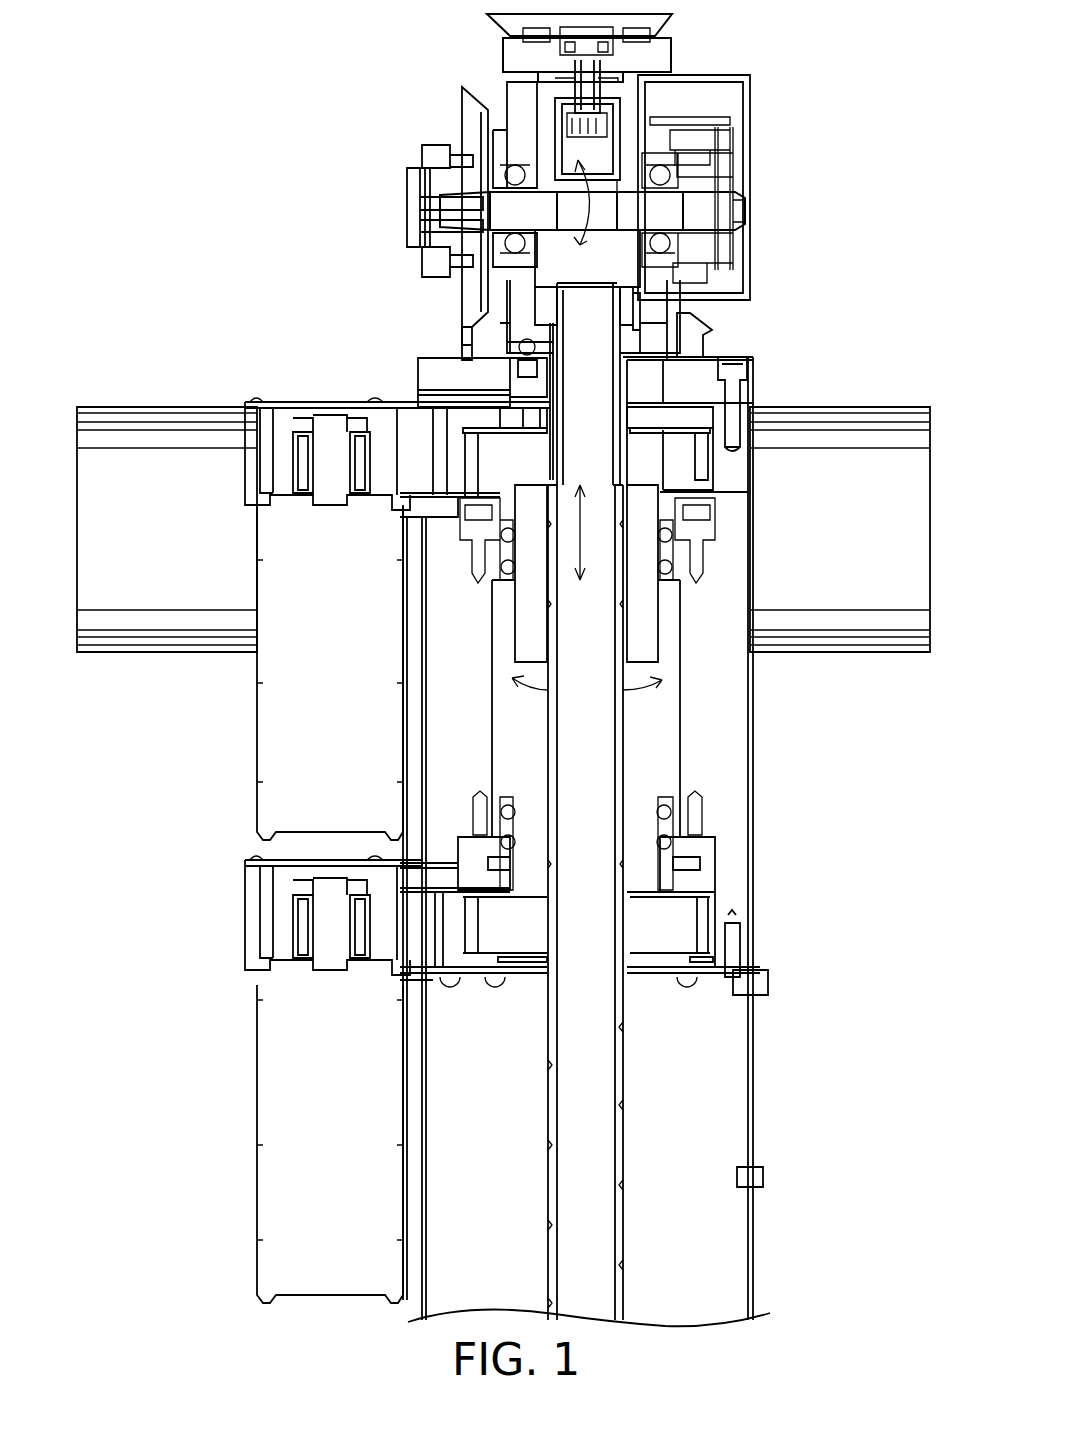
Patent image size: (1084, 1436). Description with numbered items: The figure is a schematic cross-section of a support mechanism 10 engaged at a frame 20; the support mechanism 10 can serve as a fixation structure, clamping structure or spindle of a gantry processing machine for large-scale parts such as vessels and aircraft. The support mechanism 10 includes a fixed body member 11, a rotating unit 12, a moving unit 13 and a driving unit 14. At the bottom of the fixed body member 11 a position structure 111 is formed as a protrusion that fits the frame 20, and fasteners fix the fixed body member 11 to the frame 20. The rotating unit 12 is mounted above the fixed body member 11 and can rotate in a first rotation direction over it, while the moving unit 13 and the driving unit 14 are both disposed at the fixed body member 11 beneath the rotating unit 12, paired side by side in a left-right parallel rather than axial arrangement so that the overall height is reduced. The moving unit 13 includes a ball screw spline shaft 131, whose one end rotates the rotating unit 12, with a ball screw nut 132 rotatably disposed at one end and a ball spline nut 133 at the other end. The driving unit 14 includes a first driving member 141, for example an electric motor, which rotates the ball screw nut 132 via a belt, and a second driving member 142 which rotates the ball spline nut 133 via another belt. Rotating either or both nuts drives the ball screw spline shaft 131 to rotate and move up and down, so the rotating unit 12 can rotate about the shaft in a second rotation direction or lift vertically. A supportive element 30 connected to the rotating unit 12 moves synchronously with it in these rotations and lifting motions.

The support mechanism 10 is at (503, 693).
The fixed body member 11 is at (432, 370).
The position structure 111 is at (752, 398).
The rotating unit 12 is at (771, 175).
The moving unit 13 is at (563, 804).
The ball screw spline shaft 131 is at (620, 1058).
The ball screw nut 132 is at (650, 635).
The ball spline nut 133 is at (615, 879).
The driving unit 14 is at (273, 850).
The first driving member 141 is at (262, 710).
The second driving member 142 is at (290, 1144).
The frame 20 is at (866, 625).
The supportive element 30 is at (640, 22).